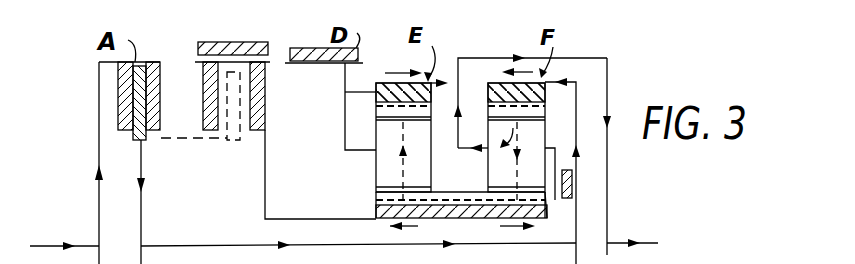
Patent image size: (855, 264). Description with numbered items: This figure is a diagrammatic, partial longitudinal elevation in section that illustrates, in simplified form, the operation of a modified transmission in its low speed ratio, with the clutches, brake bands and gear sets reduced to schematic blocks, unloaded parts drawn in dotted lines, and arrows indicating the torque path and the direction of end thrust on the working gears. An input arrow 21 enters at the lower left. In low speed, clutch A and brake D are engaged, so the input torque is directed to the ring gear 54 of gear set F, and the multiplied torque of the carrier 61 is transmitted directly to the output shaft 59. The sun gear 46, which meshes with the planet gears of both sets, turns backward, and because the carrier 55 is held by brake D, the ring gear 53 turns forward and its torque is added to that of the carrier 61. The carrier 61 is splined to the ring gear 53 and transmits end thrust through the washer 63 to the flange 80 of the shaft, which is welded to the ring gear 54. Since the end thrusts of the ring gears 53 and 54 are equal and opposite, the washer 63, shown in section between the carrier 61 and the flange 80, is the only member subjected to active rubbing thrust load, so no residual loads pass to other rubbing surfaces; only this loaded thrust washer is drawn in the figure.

The fluid inlet line 21 is at (87, 248).
The sun gear 46 is at (376, 208).
The ring gear 53 is at (352, 92).
The ring gear 54 is at (492, 82).
The carrier 55 is at (345, 128).
The output shaft 59 is at (607, 198).
The carrier 61 is at (461, 148).
The washer 63 is at (573, 178).
The flange 80 is at (576, 122).